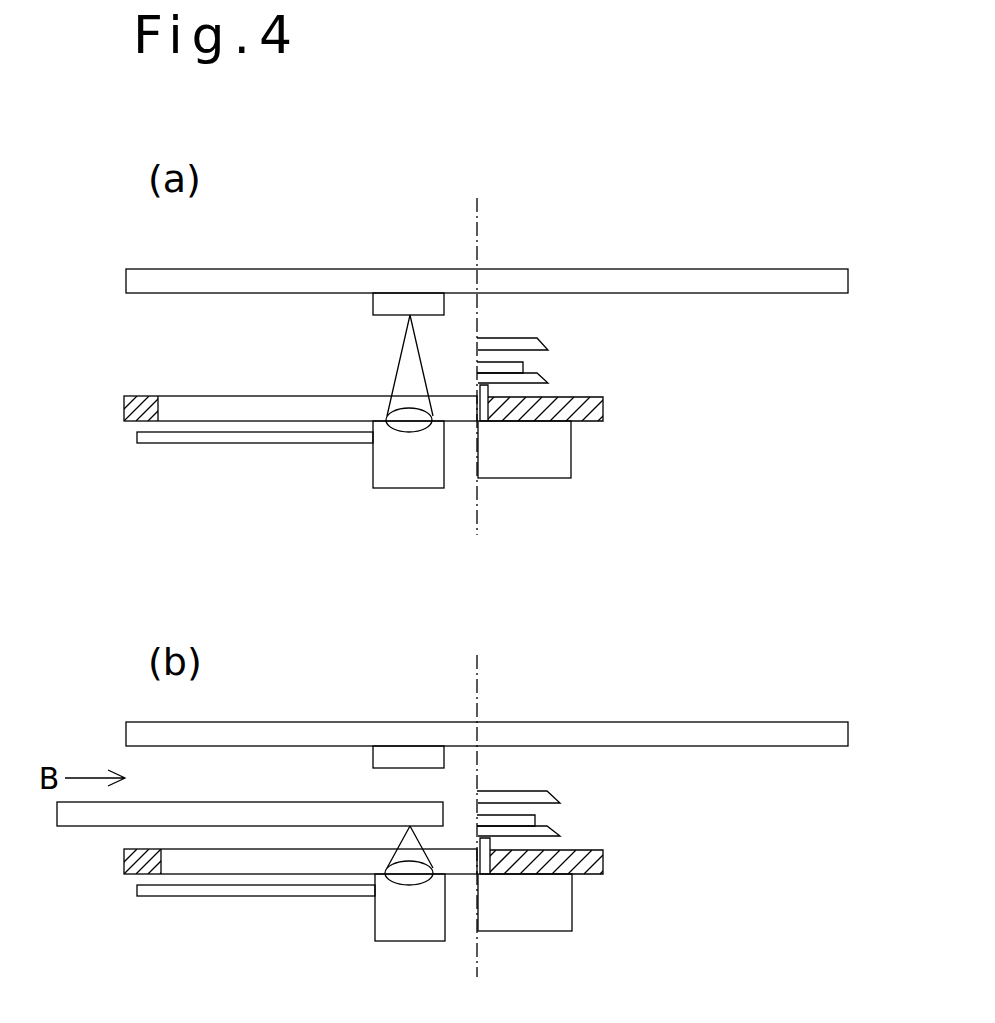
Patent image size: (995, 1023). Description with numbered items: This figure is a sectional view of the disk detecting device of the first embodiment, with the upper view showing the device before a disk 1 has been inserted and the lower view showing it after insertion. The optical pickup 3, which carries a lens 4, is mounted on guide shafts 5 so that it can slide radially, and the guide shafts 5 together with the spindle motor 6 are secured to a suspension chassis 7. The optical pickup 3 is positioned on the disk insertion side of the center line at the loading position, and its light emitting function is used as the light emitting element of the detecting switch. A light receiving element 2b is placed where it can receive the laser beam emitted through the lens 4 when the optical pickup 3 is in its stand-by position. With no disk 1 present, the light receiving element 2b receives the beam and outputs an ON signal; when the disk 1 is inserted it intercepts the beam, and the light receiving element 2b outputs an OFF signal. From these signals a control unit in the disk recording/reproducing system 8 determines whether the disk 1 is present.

The disk 1 is at (227, 802).
The light receiving element 2b is at (400, 303).
The optical pickup 3 is at (373, 470).
The lens 4 is at (403, 407).
The guide shafts 5 is at (288, 443).
The spindle motor 6 is at (538, 455).
The suspension chassis 7 is at (603, 408).
The disk recording/reproducing system 8 is at (488, 281).